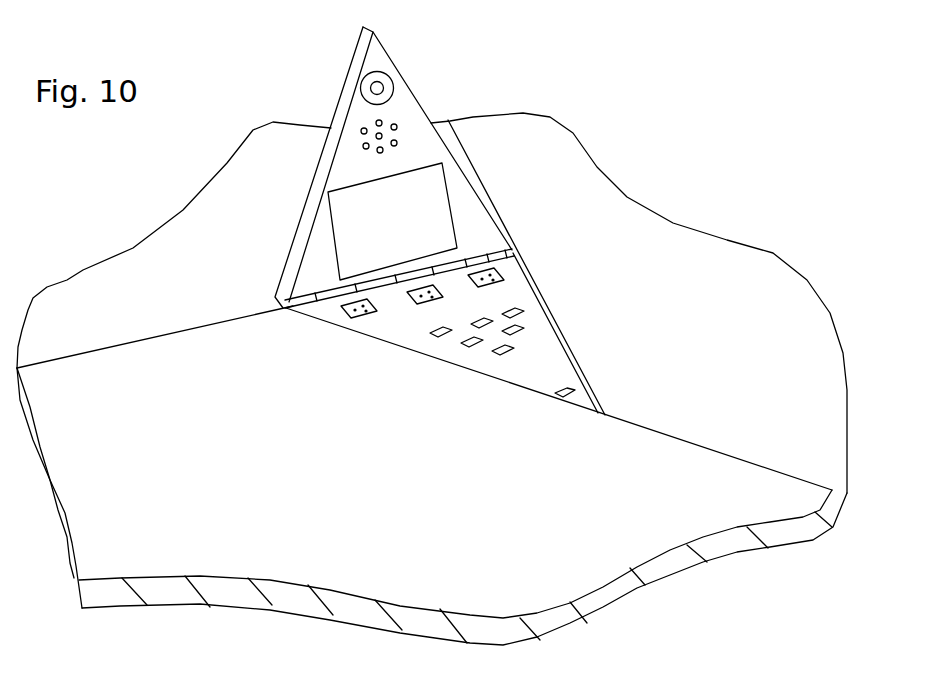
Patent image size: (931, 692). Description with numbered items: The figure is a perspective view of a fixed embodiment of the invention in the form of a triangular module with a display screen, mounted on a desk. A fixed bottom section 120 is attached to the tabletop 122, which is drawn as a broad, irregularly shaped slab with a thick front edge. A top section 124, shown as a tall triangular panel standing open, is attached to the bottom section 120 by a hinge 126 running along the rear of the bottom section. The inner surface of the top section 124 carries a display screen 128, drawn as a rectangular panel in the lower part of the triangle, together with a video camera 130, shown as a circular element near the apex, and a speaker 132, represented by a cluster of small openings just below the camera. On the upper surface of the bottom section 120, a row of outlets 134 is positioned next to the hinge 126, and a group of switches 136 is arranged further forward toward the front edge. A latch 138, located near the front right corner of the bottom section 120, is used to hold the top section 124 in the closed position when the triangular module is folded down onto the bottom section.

The bottom section 120 is at (548, 357).
The tabletop 122 is at (226, 478).
The top section 124 is at (343, 100).
The hinge 126 is at (290, 313).
The display screen 128 is at (343, 215).
The video camera 130 is at (380, 73).
The speaker 132 is at (396, 123).
The outlets 134 is at (351, 311).
The switches 136 is at (463, 340).
The latch 138 is at (560, 392).